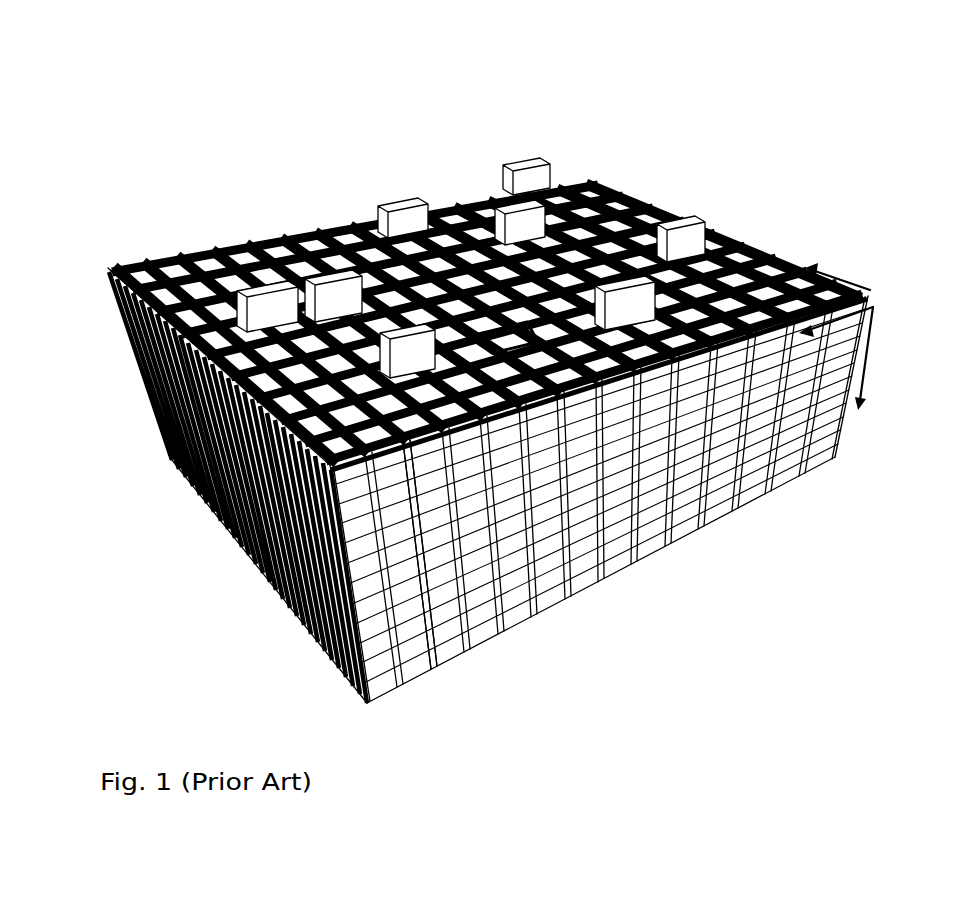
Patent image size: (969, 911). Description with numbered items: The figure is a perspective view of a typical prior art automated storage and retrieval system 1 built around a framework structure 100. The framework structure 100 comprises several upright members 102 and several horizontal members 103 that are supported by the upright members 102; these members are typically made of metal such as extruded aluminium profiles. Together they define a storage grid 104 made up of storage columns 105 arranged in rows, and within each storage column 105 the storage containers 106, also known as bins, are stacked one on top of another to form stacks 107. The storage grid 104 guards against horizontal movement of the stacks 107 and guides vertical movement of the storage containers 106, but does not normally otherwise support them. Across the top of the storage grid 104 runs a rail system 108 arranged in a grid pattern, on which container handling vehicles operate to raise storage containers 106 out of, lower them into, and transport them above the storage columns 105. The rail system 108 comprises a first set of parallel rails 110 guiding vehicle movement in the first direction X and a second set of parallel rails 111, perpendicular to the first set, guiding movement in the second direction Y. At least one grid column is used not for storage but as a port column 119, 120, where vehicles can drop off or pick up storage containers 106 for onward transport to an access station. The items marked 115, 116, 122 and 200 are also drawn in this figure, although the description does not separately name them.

The automated storage and retrieval system 1 is at (437, 91).
The framework structure 100 is at (129, 412).
The upright members 102 is at (353, 595).
The horizontal members 103 is at (677, 460).
The storage grid 104 is at (117, 298).
The storage columns 105 is at (275, 512).
The storage containers 106 is at (400, 623).
The stacks 107 is at (750, 493).
The rail system 108 is at (794, 272).
The first set of parallel rails 110 is at (265, 372).
The second set of parallel rails 111 is at (180, 272).
The track 115 is at (568, 213).
The track 116 is at (708, 273).
The port column 119 is at (430, 458).
The port column 120 is at (597, 390).
The grid cell 122 is at (485, 333).
The load handling device 200 is at (535, 172).